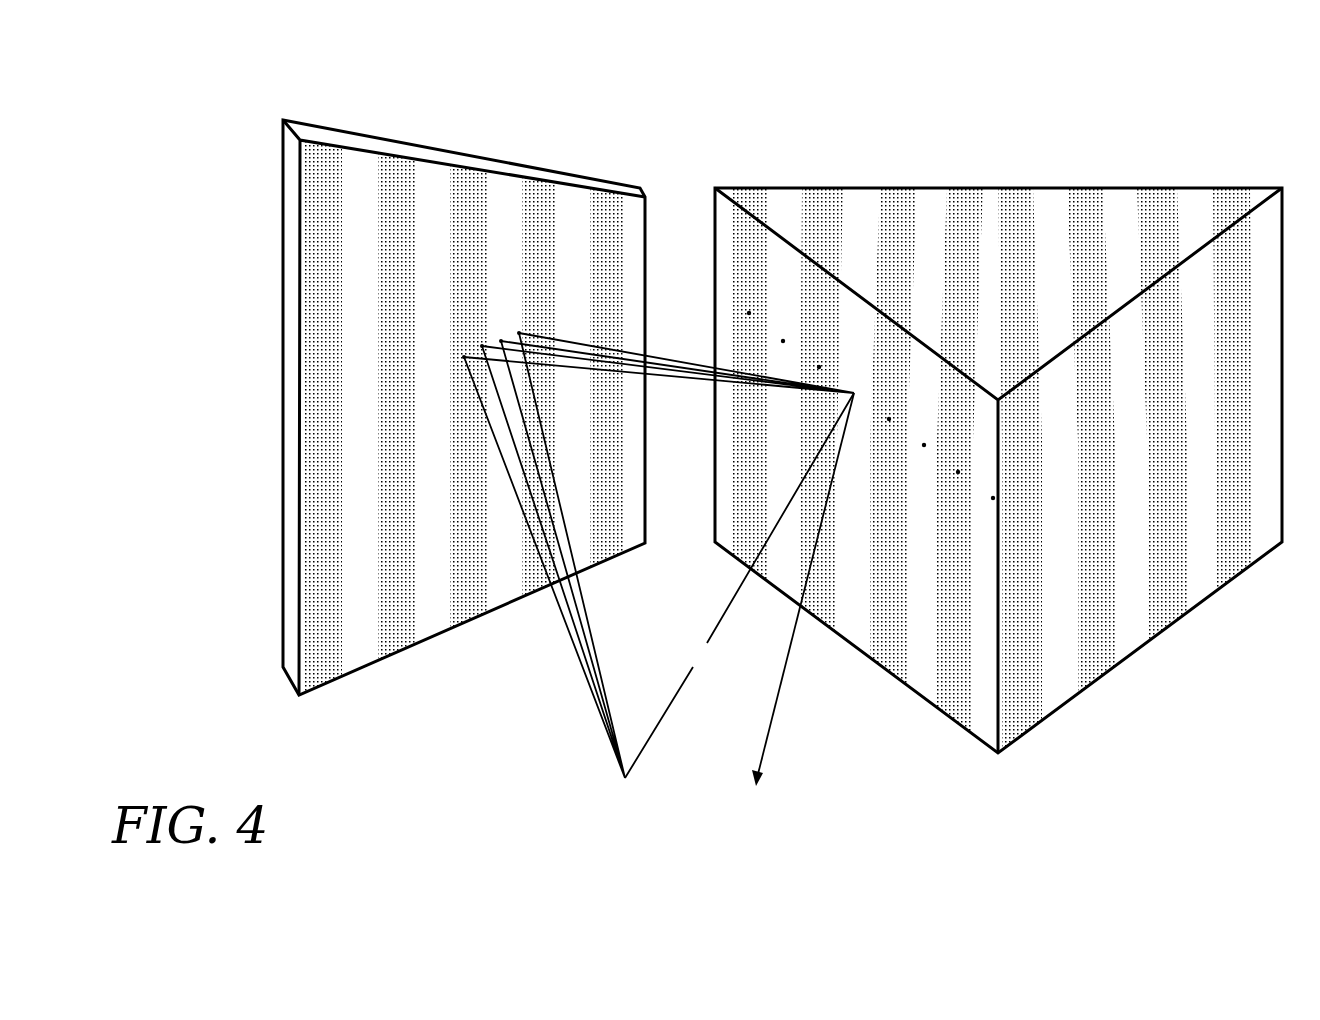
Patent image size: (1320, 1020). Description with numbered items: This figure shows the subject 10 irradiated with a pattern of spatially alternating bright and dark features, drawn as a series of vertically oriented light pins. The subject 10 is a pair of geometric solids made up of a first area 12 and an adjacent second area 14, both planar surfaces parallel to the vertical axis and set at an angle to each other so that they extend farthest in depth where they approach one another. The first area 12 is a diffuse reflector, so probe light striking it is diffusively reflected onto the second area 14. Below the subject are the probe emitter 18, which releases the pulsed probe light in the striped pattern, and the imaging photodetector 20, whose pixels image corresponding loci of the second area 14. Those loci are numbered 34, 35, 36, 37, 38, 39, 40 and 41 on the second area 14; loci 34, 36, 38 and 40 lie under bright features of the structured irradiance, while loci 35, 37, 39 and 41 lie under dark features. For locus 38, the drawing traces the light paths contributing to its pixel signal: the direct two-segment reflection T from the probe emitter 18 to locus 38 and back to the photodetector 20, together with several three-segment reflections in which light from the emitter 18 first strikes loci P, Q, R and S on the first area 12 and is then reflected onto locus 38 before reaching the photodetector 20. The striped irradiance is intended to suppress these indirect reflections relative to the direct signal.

The subject 10 is at (683, 128).
The first area 12 is at (373, 631).
The second area 14 is at (936, 668).
The probe emitter 18 is at (659, 571).
The imaging photodetector 20 is at (797, 602).
The locus 34 is at (1009, 495).
The locus 35 is at (973, 467).
The locus 36 is at (937, 441).
The locus 37 is at (902, 415).
The locus 38 is at (673, 365).
The locus 39 is at (832, 363).
The locus 40 is at (796, 336).
The locus 41 is at (762, 308).
The locus P is at (458, 351).
The locus Q is at (476, 338).
The locus R is at (499, 329).
The locus S is at (520, 322).
The direct two-segment reflection T is at (702, 655).